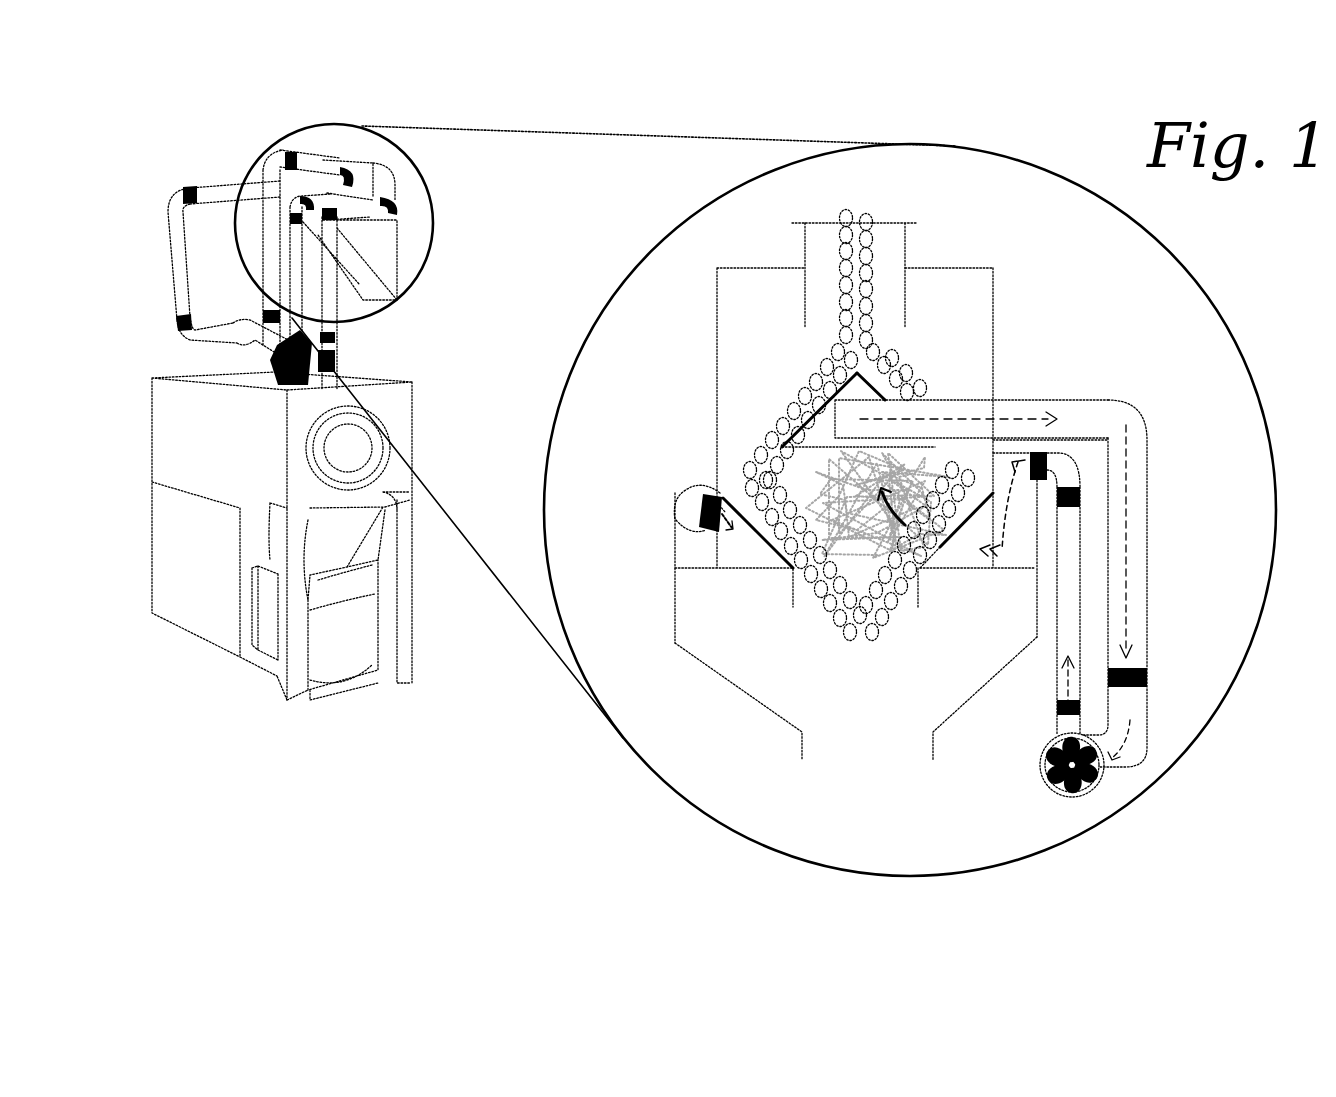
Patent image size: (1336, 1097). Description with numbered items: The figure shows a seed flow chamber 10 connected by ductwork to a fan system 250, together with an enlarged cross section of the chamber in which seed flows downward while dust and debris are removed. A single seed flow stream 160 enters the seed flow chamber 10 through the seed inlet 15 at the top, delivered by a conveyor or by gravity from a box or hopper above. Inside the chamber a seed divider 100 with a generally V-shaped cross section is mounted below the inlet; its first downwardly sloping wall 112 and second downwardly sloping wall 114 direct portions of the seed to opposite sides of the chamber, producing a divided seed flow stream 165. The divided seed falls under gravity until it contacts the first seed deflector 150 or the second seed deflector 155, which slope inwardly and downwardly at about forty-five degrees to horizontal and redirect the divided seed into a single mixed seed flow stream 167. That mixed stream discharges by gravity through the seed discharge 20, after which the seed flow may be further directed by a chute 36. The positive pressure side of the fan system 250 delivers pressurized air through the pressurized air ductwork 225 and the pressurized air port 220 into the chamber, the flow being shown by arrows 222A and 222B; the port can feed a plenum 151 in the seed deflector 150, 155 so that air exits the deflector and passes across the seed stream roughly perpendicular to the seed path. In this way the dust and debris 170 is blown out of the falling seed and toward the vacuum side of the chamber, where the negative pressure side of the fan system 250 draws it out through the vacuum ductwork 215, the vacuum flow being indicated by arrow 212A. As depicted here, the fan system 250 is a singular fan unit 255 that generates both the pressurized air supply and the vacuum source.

The seed flow chamber 10 is at (363, 160).
The seed inlet 15 is at (905, 250).
The seed discharge 20 is at (792, 602).
The chute 36 is at (408, 265).
The seed divider 100 is at (870, 376).
The first downwardly sloping wall 112 is at (818, 410).
The second downwardly sloping wall 114 is at (886, 398).
The first seed deflector 150 is at (762, 548).
The plenum 151 is at (725, 572).
The second seed deflector 155 is at (925, 545).
The single seed flow stream 160 is at (812, 248).
The divided seed flow stream 165 is at (773, 404).
The single mixed seed flow stream 167 is at (884, 648).
The dust and debris 170 is at (830, 503).
The arrow showing flow of vacuum pressure 212A is at (1013, 420).
The vacuum ductwork 215 is at (185, 190).
The pressurized air port 220 is at (722, 515).
The arrow showing flow of pressurized air 222A is at (725, 540).
The arrow showing flow of pressurized air 222B is at (1008, 572).
The pressurized air ductwork 225 is at (340, 338).
The fan system 250 is at (165, 378).
The fan unit 255 is at (1070, 790).